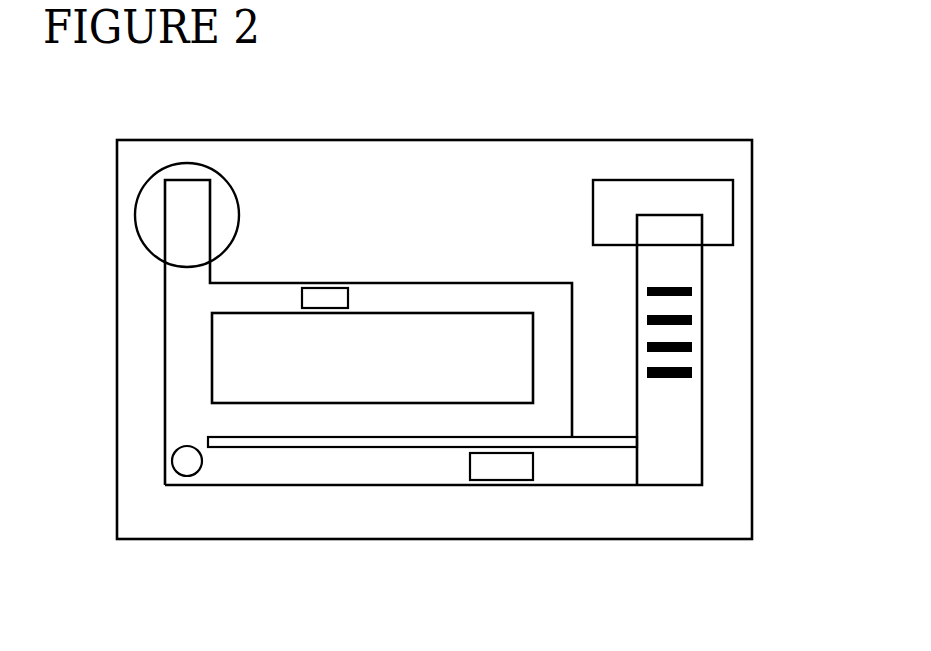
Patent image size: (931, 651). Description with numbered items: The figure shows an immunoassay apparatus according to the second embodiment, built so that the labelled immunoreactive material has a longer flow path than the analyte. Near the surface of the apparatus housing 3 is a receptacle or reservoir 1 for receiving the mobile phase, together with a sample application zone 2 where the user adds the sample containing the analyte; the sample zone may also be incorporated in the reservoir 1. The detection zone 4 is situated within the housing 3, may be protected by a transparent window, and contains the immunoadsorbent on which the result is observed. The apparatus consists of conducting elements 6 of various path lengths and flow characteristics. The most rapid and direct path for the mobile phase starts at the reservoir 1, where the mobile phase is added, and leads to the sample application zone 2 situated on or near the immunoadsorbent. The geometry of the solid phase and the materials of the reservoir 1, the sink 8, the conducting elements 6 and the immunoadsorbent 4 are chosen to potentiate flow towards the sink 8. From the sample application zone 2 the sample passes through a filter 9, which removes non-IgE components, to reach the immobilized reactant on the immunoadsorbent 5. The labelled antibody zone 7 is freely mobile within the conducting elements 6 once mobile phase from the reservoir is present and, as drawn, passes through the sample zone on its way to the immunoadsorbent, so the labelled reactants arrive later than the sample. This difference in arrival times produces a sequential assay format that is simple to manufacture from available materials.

The receptacle for receiving the mobile phase 1 is at (152, 211).
The sample application zone 2 is at (188, 462).
The apparatus housing 3 is at (700, 523).
The detection zone 4 is at (693, 310).
The immunoadsorbent 5 is at (670, 378).
The conducting elements 6 is at (187, 337).
The labelled antibody zone 7 is at (327, 297).
The sink 8 is at (690, 203).
The filter 9 is at (505, 470).